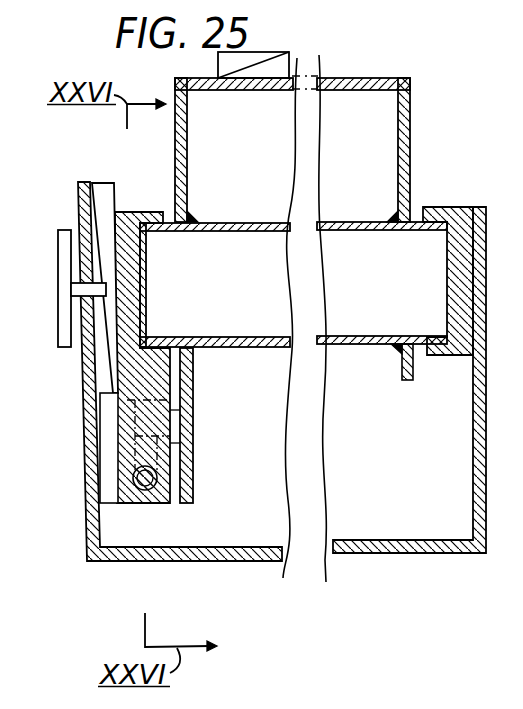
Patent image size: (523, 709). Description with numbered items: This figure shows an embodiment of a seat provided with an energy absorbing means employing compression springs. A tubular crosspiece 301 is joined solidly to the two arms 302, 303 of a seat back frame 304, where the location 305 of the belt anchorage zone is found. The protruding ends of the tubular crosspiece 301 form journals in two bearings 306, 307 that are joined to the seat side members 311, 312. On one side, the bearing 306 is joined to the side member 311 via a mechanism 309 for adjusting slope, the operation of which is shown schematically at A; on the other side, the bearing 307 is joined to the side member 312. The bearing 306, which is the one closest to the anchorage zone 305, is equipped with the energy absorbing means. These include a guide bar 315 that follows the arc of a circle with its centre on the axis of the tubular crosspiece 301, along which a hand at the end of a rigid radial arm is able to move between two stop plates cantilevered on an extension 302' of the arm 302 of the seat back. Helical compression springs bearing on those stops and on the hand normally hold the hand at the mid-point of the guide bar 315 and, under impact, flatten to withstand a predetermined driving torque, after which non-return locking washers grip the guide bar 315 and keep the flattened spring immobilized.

The tubular crosspiece 301 is at (275, 222).
The arm 302 is at (206, 150).
The extension of the arm 302' is at (218, 425).
The arm 303 is at (400, 140).
The seat back frame 304 is at (277, 91).
The location of the belt anchorage zone 305 is at (217, 63).
The bearing 306 is at (132, 211).
The bearing 307 is at (440, 206).
The mechanism for adjusting slope 309 is at (102, 181).
The seat side member 311 is at (178, 562).
The seat side member 312 is at (380, 554).
The guide bar 315 is at (125, 501).
The operation of the slope adjusting mechanism A is at (63, 227).